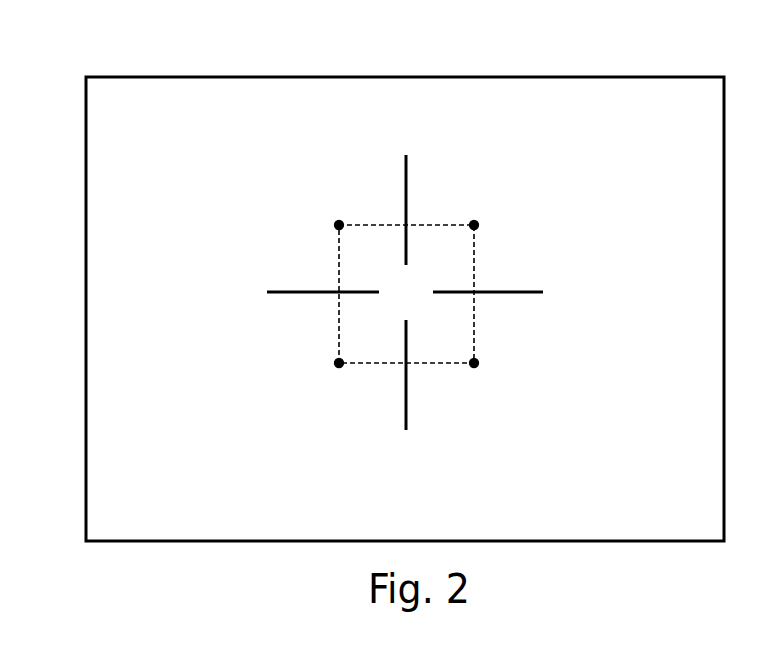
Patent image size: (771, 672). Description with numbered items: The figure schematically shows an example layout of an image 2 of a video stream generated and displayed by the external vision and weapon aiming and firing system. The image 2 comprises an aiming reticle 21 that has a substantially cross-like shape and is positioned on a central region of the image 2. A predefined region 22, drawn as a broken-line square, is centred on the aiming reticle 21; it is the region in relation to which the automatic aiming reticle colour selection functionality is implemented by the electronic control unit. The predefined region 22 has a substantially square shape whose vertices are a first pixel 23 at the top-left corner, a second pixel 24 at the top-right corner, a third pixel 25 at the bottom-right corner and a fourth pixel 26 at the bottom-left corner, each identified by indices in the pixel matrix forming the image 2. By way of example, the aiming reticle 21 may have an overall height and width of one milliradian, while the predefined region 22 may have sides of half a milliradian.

The image 2 is at (77, 62).
The aiming reticle 21 is at (406, 182).
The predefined region 22 is at (383, 253).
The first pixel 23 is at (336, 221).
The second pixel 24 is at (480, 225).
The third pixel 25 is at (478, 366).
The fourth pixel 26 is at (335, 365).